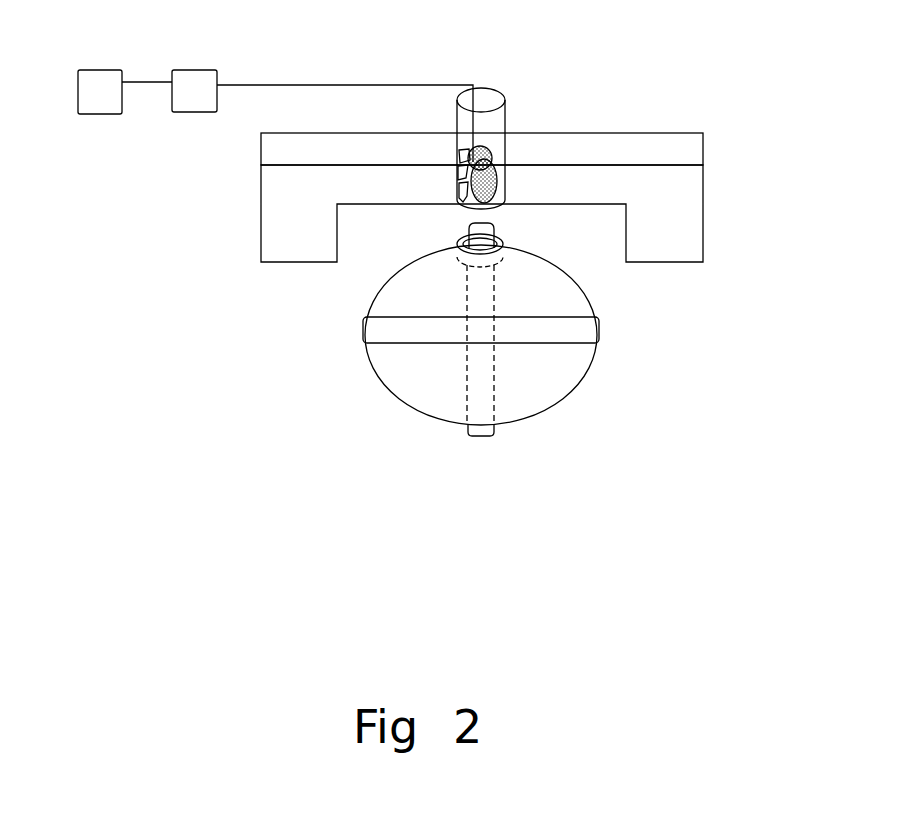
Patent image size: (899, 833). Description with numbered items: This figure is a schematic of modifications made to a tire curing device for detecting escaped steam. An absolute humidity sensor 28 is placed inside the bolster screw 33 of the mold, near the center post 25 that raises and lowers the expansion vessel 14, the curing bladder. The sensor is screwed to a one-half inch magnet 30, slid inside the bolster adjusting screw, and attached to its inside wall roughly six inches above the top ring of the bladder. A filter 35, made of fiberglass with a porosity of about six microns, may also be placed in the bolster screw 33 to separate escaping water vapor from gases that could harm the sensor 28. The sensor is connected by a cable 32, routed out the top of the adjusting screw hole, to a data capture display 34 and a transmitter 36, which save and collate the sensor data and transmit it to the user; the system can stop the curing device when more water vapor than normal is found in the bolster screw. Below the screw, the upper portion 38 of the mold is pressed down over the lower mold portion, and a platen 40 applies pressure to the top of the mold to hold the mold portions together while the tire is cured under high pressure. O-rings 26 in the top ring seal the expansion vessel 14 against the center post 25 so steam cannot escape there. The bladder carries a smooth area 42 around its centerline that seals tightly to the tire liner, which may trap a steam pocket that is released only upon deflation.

The expansion vessel 14 is at (556, 366).
The center post 25 is at (480, 386).
The O-rings 26 is at (503, 243).
The absolute humidity sensor 28 is at (500, 188).
The magnet 30 is at (462, 160).
The cable 32 is at (367, 85).
The bolster screw 33 is at (502, 112).
The data capture display 34 is at (100, 82).
The filter 35 is at (492, 163).
The transmitter 36 is at (193, 82).
The upper portion of the mold 38 is at (704, 203).
The platen 40 is at (703, 148).
The smooth area 42 is at (385, 327).